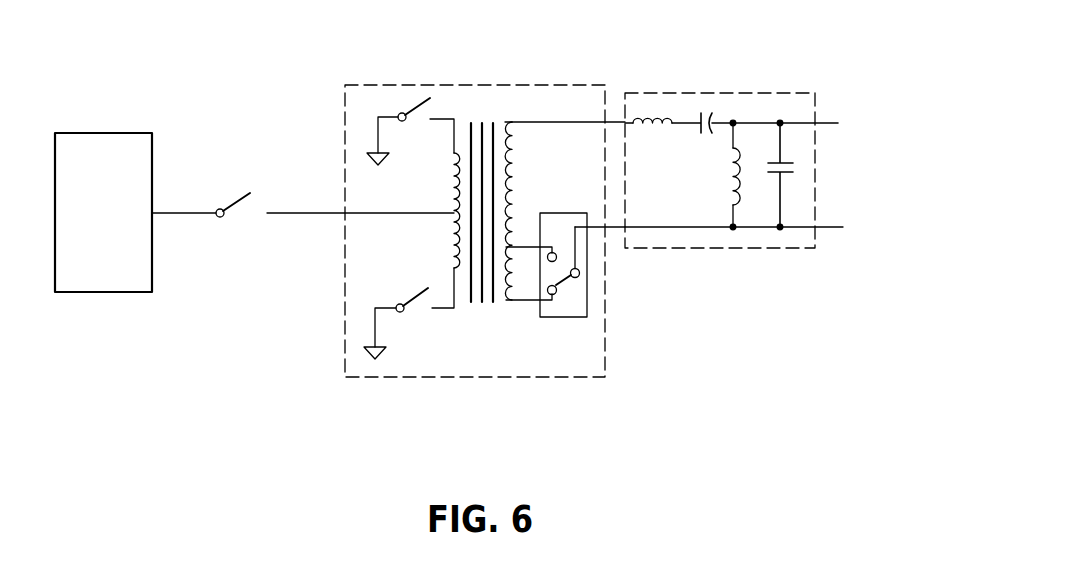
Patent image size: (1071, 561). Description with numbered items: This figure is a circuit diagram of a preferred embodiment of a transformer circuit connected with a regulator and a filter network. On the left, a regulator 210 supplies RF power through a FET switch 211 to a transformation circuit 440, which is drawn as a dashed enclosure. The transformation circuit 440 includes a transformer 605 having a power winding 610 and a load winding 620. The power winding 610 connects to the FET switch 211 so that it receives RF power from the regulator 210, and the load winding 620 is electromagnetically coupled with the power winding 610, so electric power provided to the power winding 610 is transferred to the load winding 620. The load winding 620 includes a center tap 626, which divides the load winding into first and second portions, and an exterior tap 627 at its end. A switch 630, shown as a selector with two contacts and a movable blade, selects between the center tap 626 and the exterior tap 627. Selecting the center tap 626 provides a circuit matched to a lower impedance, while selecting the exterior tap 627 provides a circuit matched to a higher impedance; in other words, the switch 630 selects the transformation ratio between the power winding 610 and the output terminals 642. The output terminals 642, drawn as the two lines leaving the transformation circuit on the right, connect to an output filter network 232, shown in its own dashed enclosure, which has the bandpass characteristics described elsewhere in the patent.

The regulator 210 is at (88, 133).
The FET switch 211 is at (412, 310).
The power winding 610 is at (456, 187).
The transformation circuit 440 is at (586, 86).
The transformer 605 is at (478, 306).
The load winding 620 is at (507, 160).
The center tap 626 is at (528, 247).
The exterior tap 627 is at (522, 300).
The switch 630 is at (563, 286).
The output terminals 642 is at (550, 122).
The output filter network 232 is at (763, 95).